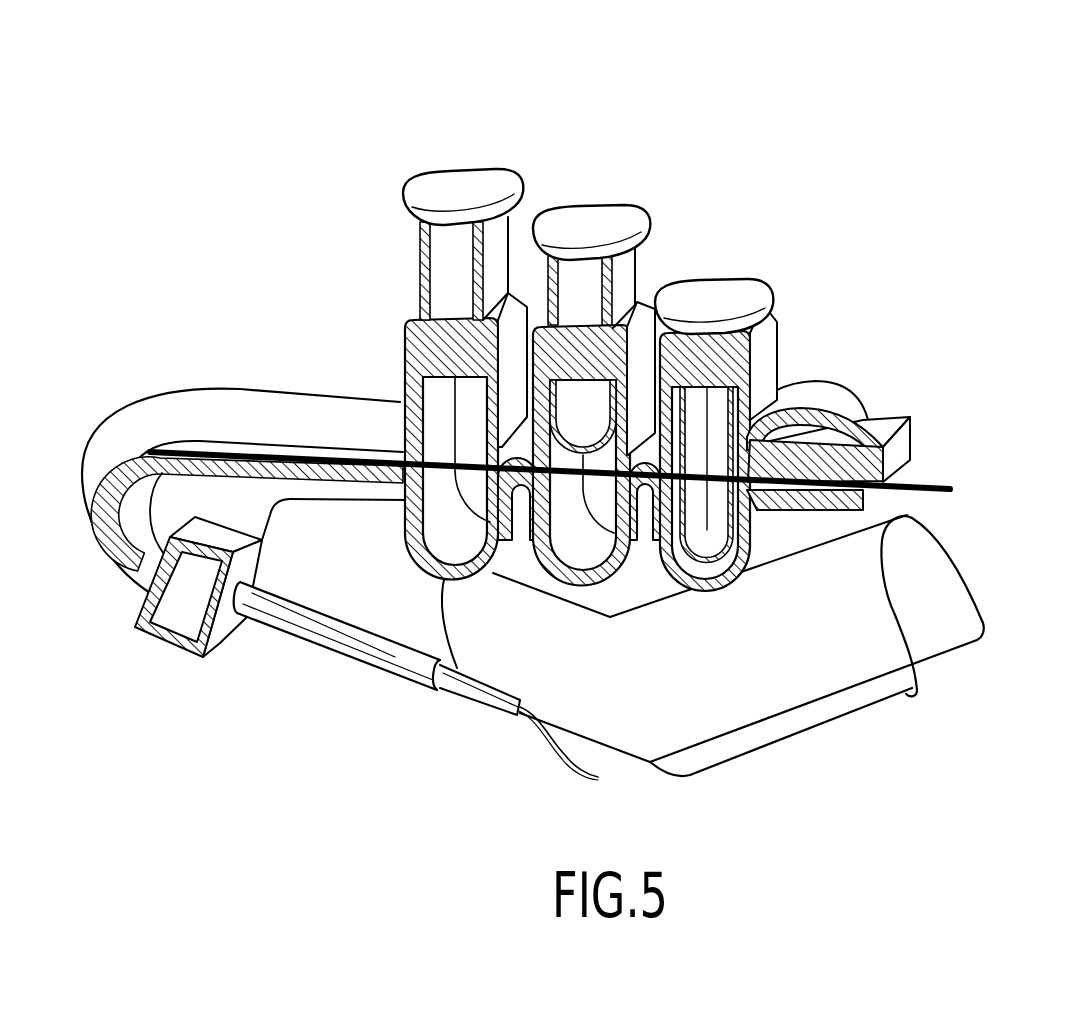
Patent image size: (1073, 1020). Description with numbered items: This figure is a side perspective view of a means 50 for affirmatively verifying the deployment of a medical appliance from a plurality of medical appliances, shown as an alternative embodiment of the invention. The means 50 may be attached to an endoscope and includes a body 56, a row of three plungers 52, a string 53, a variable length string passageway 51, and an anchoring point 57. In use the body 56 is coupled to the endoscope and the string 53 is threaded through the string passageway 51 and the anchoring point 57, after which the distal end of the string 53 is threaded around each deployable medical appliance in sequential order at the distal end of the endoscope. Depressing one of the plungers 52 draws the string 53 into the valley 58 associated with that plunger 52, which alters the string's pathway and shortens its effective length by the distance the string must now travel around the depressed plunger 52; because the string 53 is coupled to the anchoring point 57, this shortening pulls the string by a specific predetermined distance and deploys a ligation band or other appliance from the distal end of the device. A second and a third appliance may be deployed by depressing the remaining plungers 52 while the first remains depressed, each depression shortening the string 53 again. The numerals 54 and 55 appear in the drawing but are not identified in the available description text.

The means for affirmatively verifying deployment 50 is at (516, 112).
The variable length string passageway 51 is at (193, 440).
The plunger 52 is at (601, 222).
The string 53 is at (947, 490).
The corrugated sheet 54 is at (640, 547).
The base body 55 is at (813, 528).
The body 56 is at (872, 653).
The anchoring point 57 is at (863, 453).
The valley 58 is at (587, 540).